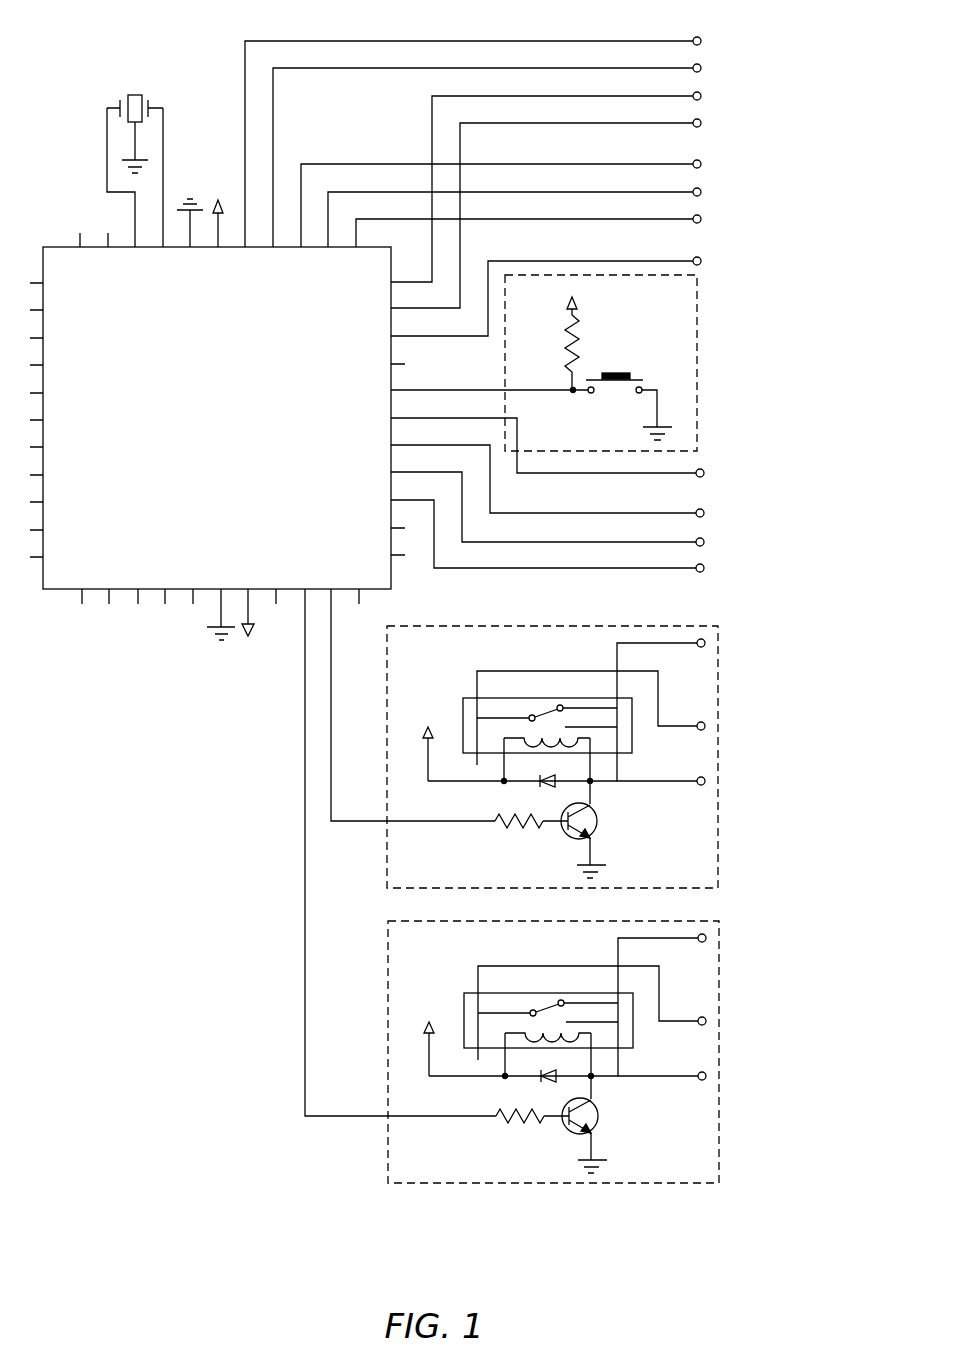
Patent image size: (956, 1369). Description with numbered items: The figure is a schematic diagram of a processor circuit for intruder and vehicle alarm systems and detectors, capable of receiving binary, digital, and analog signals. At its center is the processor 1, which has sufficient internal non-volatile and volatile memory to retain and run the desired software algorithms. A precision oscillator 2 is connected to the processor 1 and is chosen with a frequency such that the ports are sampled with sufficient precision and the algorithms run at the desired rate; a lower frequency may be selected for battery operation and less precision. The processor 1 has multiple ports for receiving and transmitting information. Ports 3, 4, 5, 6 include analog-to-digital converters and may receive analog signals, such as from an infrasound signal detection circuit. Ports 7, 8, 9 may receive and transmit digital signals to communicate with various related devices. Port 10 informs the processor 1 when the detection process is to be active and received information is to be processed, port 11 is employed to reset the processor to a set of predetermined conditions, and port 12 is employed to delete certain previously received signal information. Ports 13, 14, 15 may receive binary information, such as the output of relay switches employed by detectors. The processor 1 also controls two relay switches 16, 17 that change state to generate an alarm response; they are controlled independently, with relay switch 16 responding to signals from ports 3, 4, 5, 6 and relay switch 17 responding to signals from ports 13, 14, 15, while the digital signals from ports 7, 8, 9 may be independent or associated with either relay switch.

The processor 1 is at (178, 596).
The precision oscillator 2 is at (135, 86).
The port 3 is at (714, 41).
The port 4 is at (714, 68).
The port 5 is at (714, 96).
The port 6 is at (714, 123).
The port 7 is at (714, 164).
The port 8 is at (714, 192).
The port 9 is at (714, 219).
The port 10 is at (714, 261).
The port 11 is at (712, 380).
The port 12 is at (716, 473).
The port 13 is at (716, 513).
The port 14 is at (716, 542).
The port 15 is at (716, 568).
The relay switch 16 is at (729, 759).
The relay switch 17 is at (732, 1050).